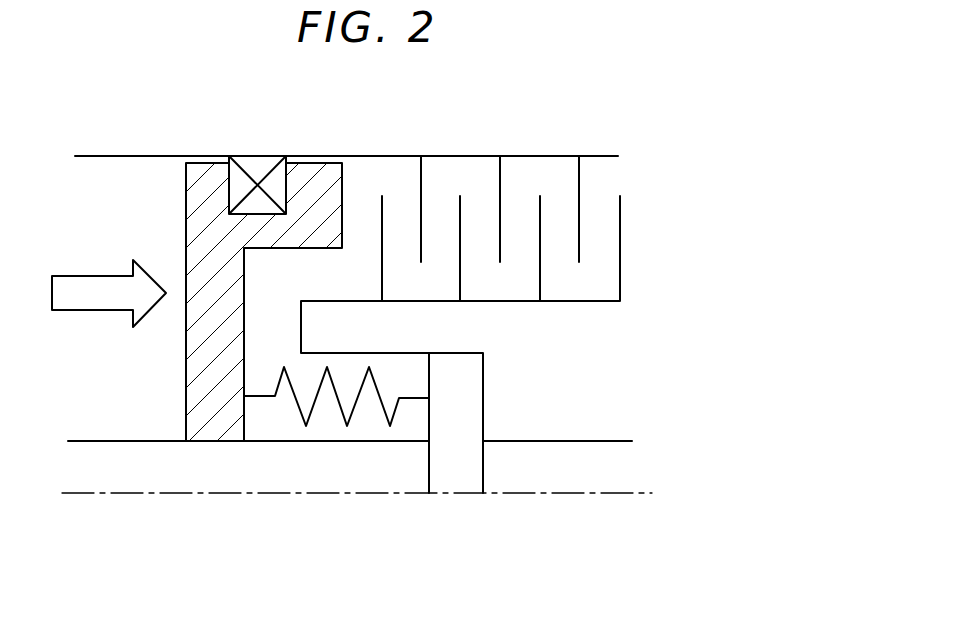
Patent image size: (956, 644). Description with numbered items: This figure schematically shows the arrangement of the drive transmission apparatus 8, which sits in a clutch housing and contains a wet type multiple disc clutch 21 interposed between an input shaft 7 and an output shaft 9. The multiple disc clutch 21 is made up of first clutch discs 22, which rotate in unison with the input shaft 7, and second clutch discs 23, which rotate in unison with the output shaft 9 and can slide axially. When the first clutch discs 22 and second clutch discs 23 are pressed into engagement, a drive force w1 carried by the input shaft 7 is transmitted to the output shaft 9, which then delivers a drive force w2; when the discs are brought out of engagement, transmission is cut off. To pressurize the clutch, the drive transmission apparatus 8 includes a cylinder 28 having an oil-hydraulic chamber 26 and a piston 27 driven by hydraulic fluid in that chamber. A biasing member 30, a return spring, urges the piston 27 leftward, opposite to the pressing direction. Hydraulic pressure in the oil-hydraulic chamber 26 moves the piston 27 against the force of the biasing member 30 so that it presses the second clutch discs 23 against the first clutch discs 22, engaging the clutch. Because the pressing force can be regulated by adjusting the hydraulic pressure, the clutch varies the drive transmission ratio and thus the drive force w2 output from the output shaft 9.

The input shaft 7 is at (98, 455).
The drive transmission apparatus 8 is at (577, 138).
The output shaft 9 is at (527, 460).
The multiple disc clutch 21 is at (522, 289).
The first clutch discs 22 is at (500, 185).
The second clutch discs 23 is at (540, 280).
The oil-hydraulic chamber 26 is at (133, 188).
The piston 27 is at (235, 157).
The cylinder 28 is at (307, 247).
The biasing member 30 is at (357, 407).
The drive force w1 is at (153, 533).
The drive force w2 is at (595, 538).